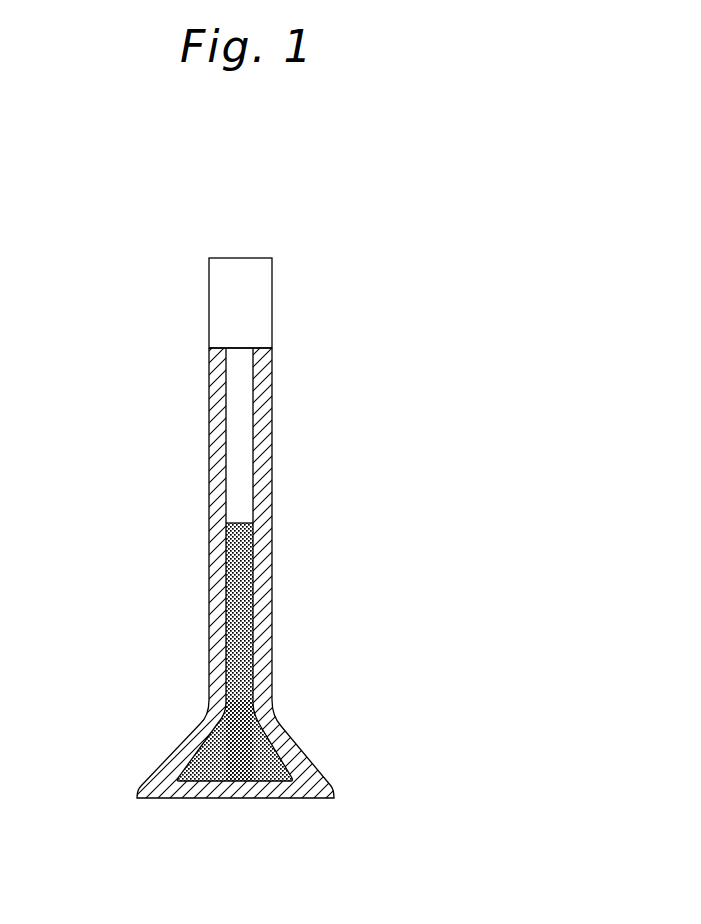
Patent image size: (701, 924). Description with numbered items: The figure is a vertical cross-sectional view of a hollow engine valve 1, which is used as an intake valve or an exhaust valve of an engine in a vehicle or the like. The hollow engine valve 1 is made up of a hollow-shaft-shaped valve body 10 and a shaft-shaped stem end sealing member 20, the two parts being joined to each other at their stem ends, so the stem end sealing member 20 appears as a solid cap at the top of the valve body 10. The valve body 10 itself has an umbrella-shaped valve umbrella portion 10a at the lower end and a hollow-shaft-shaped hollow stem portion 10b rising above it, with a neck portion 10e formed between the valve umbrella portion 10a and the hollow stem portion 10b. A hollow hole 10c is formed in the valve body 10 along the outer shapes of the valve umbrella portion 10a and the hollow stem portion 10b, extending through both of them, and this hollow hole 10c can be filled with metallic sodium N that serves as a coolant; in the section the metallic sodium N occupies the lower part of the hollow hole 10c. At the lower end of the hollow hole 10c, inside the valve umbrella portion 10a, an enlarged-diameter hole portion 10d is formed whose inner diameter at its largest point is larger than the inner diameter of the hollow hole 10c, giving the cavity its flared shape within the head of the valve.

The hollow engine valve 1 is at (307, 236).
The valve body 10 is at (273, 440).
The valve umbrella portion 10a is at (173, 748).
The hollow stem portion 10b is at (209, 565).
The hollow hole 10c is at (222, 452).
The enlarged-diameter hole portion 10d is at (281, 755).
The neck portion 10e is at (277, 722).
The stem end sealing member 20 is at (209, 312).
The metallic sodium N is at (238, 568).